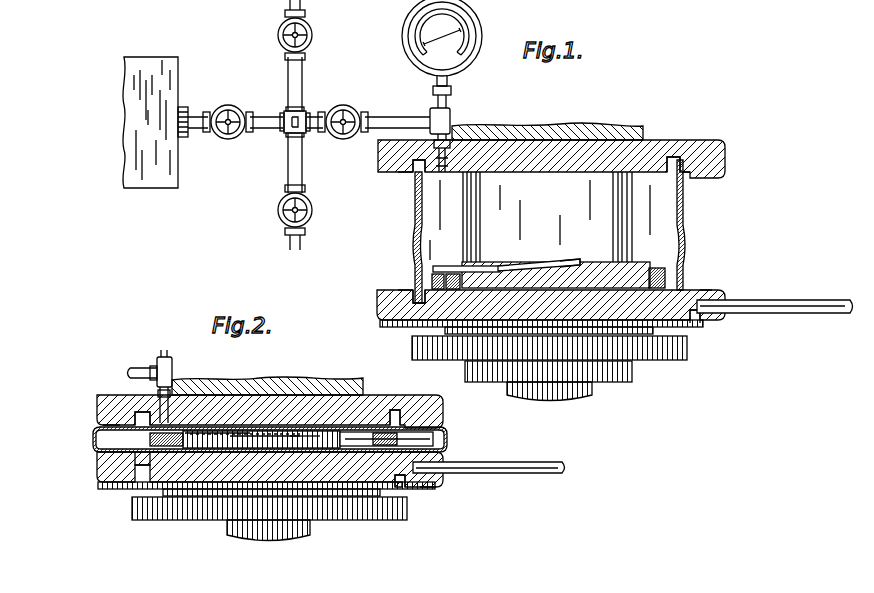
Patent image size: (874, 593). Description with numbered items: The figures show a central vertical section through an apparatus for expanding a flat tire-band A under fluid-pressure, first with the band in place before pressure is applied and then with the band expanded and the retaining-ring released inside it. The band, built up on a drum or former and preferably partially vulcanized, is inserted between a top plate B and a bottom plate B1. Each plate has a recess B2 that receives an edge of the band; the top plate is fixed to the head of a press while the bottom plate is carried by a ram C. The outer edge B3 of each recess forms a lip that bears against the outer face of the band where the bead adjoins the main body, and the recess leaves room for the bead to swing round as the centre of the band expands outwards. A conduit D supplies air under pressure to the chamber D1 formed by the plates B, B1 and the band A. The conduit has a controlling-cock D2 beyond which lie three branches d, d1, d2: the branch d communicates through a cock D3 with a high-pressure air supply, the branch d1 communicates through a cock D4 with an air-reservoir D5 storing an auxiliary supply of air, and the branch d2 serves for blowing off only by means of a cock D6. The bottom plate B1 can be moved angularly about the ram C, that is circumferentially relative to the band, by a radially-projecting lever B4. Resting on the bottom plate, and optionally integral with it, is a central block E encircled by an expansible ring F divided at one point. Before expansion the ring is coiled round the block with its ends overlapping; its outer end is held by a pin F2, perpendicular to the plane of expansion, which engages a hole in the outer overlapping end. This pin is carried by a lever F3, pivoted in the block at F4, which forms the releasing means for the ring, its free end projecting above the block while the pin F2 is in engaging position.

In FIG. 1, the tire-band A is at (414, 233).
In FIG. 2, the tire-band A is at (446, 439).
In FIG. 1, the top plate B is at (594, 148).
In FIG. 2, the top plate B is at (322, 400).
In FIG. 1, the bottom plate B1 is at (664, 350).
In FIG. 2, the bottom plate B1 is at (220, 466).
In FIG. 1, the recess B2 is at (422, 166).
In FIG. 2, the recess B2 is at (393, 417).
In FIG. 1, the outer edge of recess B3 is at (411, 177).
In FIG. 2, the outer edge of recess B3 is at (120, 425).
In FIG. 1, the radially-projecting lever B4 is at (797, 307).
In FIG. 2, the radially-projecting lever B4 is at (543, 463).
In FIG. 1, the ram C is at (585, 390).
In FIG. 2, the ram C is at (303, 535).
In FIG. 1, the conduit D is at (448, 118).
In FIG. 2, the conduit D is at (170, 377).
In FIG. 1, the chamber D1 is at (540, 217).
In FIG. 1, the controlling-cock D2 is at (343, 105).
In FIG. 1, the cock D3 is at (311, 33).
In FIG. 1, the cock D4 is at (228, 105).
In FIG. 1, the air-reservoir D5 is at (156, 180).
In FIG. 1, the cock D6 is at (310, 200).
In FIG. 1, the branch d is at (294, 72).
In FIG. 1, the branch d1 is at (272, 128).
In FIG. 1, the branch d2 is at (298, 150).
In FIG. 1, the central block E is at (610, 280).
In FIG. 2, the central block E is at (275, 430).
In FIG. 1, the expansible ring F is at (666, 272).
In FIG. 2, the expansible ring F is at (443, 425).
In FIG. 1, the pin F2 is at (431, 278).
In FIG. 2, the pin F2 is at (152, 432).
In FIG. 1, the lever F3 is at (452, 266).
In FIG. 2, the lever F3 is at (213, 432).
In FIG. 1, the pivot F4 is at (503, 261).
In FIG. 2, the pivot F4 is at (240, 432).